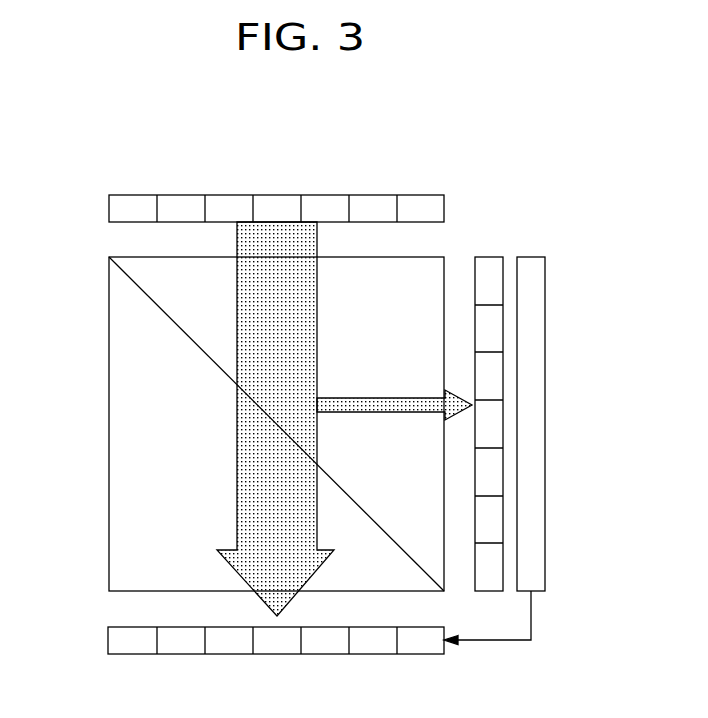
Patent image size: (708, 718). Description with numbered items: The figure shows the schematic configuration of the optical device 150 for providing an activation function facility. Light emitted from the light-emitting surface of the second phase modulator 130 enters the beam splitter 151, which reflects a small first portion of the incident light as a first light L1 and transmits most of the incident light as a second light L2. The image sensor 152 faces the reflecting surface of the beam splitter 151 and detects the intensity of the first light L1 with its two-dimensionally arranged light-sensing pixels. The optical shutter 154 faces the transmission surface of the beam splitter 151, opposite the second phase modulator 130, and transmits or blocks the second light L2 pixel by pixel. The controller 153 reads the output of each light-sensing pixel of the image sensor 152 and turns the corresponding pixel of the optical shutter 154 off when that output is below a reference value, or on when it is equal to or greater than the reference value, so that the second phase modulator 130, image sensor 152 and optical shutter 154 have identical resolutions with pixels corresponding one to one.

The optical device 150 is at (552, 134).
The second phase modulator 130 is at (418, 195).
The beam splitter 151 is at (109, 423).
The image sensor 152 is at (489, 257).
The controller 153 is at (534, 257).
The optical shutter 154 is at (108, 638).
The first light L1 is at (410, 410).
The second light L2 is at (255, 500).